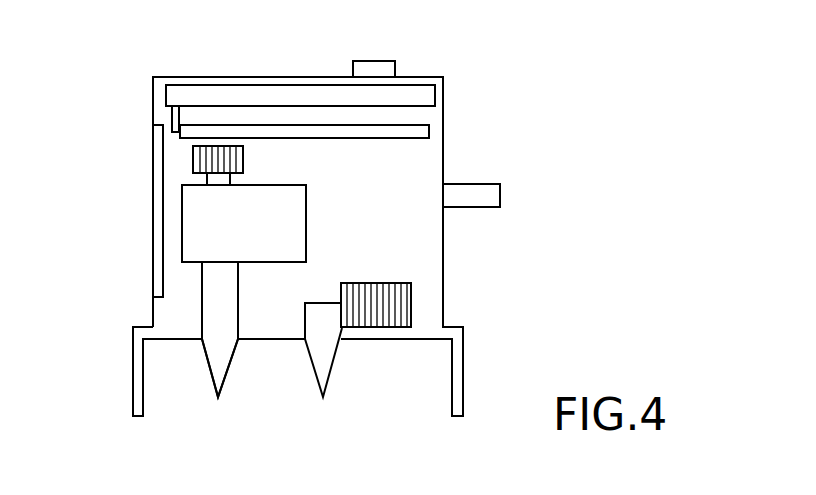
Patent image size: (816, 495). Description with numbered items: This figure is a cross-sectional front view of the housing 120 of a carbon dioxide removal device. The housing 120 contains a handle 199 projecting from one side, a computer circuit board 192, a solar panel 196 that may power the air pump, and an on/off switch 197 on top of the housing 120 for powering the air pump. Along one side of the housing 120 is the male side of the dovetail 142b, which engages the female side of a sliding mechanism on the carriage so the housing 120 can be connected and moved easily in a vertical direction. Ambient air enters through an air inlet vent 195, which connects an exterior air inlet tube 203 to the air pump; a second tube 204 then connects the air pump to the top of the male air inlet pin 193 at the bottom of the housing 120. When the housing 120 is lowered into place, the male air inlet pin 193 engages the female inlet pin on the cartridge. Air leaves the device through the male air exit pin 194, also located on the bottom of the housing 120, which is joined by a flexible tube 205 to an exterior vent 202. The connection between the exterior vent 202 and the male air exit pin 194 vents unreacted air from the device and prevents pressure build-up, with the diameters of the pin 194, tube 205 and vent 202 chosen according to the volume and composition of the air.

The housing 120 is at (658, 125).
The male side of the dovetail 142b is at (153, 240).
The computer circuit board 192 is at (425, 127).
The male air inlet pin 193 is at (212, 372).
The male air exit pin 194 is at (330, 375).
The air inlet vent 195 is at (180, 150).
The solar panel 196 is at (425, 93).
The on/off switch 197 is at (385, 60).
The handle 199 is at (500, 194).
The exterior vent 202 is at (431, 302).
The exterior air inlet tube 203 is at (187, 179).
The second tube 204 is at (187, 281).
The flexible tube 205 is at (341, 328).